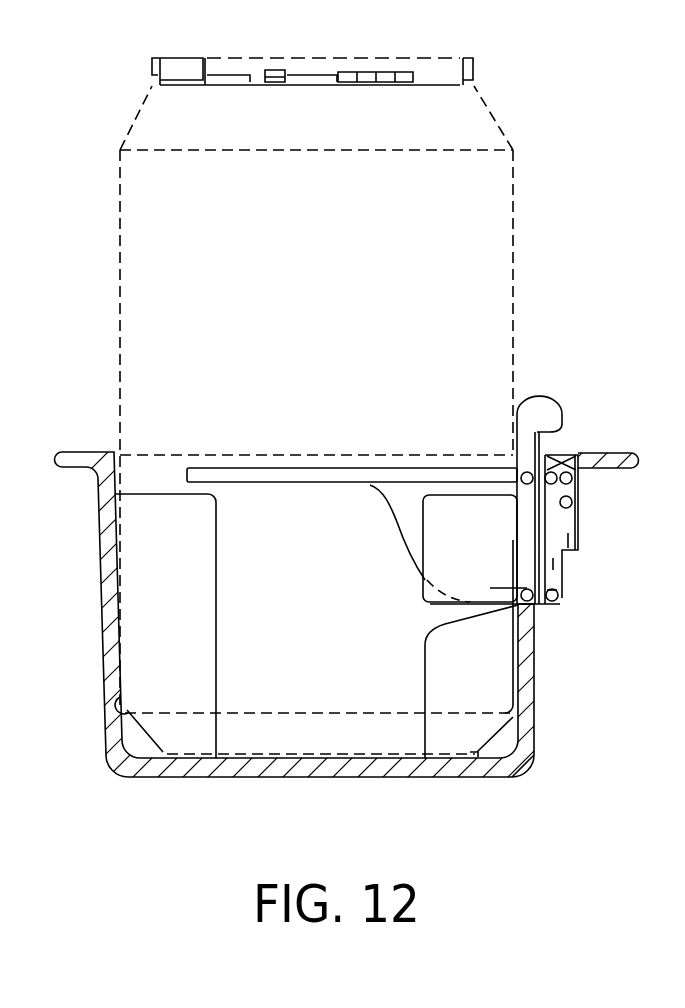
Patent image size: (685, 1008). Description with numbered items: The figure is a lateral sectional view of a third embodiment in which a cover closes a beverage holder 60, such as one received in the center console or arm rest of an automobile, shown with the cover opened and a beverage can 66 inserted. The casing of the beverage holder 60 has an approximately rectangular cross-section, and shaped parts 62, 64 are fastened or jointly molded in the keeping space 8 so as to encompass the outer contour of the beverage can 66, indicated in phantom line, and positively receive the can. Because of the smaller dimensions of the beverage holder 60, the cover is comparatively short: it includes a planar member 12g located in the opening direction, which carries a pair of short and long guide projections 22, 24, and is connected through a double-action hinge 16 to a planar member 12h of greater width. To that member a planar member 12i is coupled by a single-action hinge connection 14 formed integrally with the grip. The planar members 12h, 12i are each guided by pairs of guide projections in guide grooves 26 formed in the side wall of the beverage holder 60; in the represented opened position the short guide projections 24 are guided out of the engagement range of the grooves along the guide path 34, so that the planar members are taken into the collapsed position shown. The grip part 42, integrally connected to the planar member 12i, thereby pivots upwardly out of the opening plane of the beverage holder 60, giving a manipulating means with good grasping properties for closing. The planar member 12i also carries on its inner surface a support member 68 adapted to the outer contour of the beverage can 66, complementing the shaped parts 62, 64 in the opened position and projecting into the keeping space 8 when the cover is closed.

The keeping space 8 is at (135, 750).
The beverage holder 60 is at (535, 786).
The shaped part 62 is at (200, 582).
The shaped part 64 is at (447, 695).
The beverage can 66 is at (335, 301).
The support member 68 is at (482, 558).
The guide groove 26 is at (293, 481).
The guide path 34 is at (402, 528).
The grip part 42 is at (543, 405).
The double-action hinge 16 is at (566, 444).
The long guide projection 22 is at (567, 478).
The short guide projection 24 is at (567, 502).
The planar member 12g is at (568, 533).
The planar member 12h is at (553, 558).
The planar member 12i is at (552, 595).
The single-action hinge connection 14 is at (544, 629).